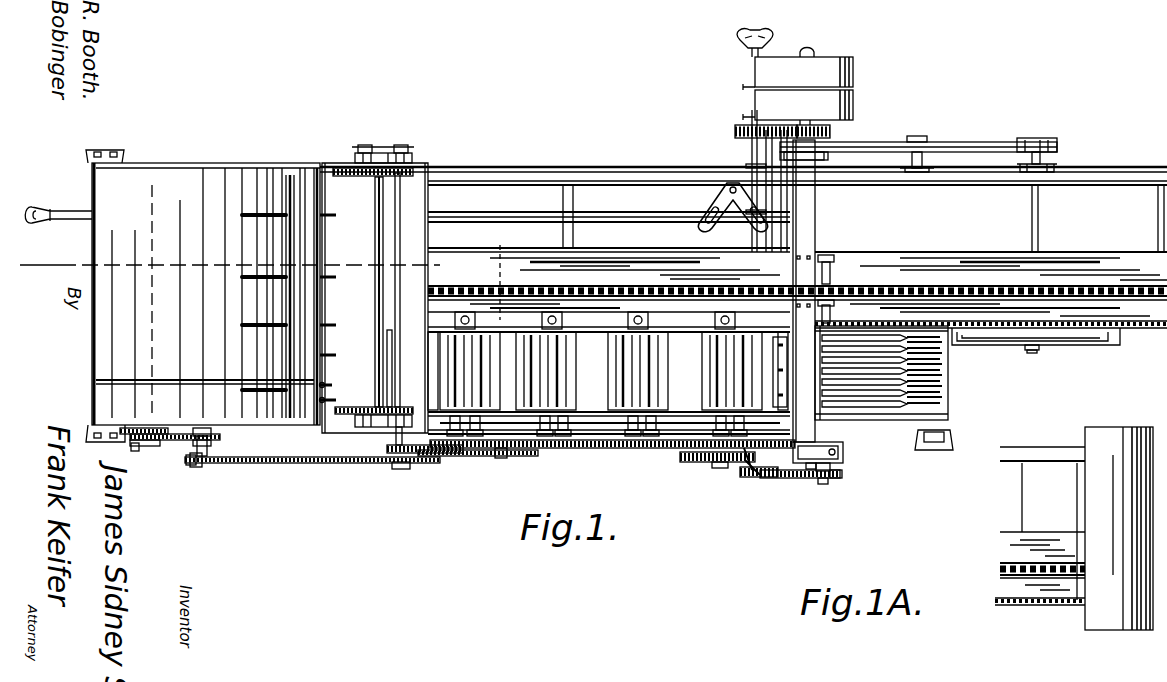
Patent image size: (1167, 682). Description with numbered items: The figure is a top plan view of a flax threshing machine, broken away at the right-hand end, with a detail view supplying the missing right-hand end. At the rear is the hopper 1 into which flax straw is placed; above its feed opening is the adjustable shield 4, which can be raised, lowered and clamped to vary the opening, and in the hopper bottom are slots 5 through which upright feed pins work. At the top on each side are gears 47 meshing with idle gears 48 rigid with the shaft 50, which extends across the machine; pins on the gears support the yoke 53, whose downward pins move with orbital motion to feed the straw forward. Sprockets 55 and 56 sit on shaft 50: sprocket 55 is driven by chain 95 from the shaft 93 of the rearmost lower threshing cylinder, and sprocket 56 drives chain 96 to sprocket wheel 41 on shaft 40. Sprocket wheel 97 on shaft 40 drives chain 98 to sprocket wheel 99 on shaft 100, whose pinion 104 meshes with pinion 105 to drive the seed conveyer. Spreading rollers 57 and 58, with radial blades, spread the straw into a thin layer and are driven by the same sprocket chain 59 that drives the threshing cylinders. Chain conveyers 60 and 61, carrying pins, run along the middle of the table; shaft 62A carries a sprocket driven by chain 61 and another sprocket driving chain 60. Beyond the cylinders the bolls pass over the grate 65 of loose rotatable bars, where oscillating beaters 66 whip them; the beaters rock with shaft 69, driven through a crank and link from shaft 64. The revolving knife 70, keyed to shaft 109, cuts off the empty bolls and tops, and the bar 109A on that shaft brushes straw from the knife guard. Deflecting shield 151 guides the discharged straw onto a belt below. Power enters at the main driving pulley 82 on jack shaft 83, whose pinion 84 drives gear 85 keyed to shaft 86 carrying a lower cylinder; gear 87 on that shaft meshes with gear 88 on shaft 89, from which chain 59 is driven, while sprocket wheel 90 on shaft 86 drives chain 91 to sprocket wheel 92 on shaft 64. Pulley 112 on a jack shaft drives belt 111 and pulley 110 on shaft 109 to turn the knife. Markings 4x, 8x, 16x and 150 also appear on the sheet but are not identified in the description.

In FIG. 1, the hopper 1 is at (170, 185).
In FIG. 1, the adjustable shield 4 is at (292, 185).
In FIG. 1, the center line 4x is at (75, 265).
In FIG. 1, the slots 5 is at (247, 325).
In FIG. 1, the center line 8x is at (609, 278).
In FIG. 1, the gears 47 is at (342, 177).
In FIG. 1, the idle gears 48 is at (408, 176).
In FIG. 1, the shaft 50 is at (400, 262).
In FIG. 1, the yoke 53 is at (376, 246).
In FIG. 1, the spreading roller 57 is at (390, 352).
In FIG. 1, the sprocket 55 is at (396, 447).
In FIG. 1, the sprocket 56 is at (400, 464).
In FIG. 1, the spreading roller 58 is at (480, 350).
In FIG. 1, the sprocket chain 59 is at (570, 450).
In FIG. 1, the shaft 40 is at (212, 446).
In FIG. 1, the sprocket wheel 41 is at (190, 462).
In FIG. 1, the shaft 93 is at (505, 457).
In FIG. 1, the sprocket chain 95 is at (455, 456).
In FIG. 1, the sprocket chain 96 is at (335, 463).
In FIG. 1, the sprocket wheel 97 is at (210, 430).
In FIG. 1, the sprocket chain 98 is at (178, 442).
In FIG. 1, the sprocket wheel 99 is at (112, 442).
In FIG. 1, the shaft 100 is at (135, 450).
In FIG. 1, the pinion 104 is at (142, 428).
In FIG. 1, the pinion 105 is at (168, 430).
In FIG. 1, the roller shaft 150 is at (609, 424).
In FIG. 1, the magazine 16x is at (822, 394).
In FIG. 1, the grate 65 is at (920, 376).
In FIG. 1, the beaters 66 is at (878, 400).
In FIG. 1, the shaft 64 is at (842, 465).
In FIG. 1, the shaft 69 is at (822, 482).
In FIG. 1, the gear 88 is at (698, 462).
In FIG. 1, the shaft 89 is at (718, 466).
In FIG. 1, the gear 87 is at (740, 468).
In FIG. 1, the sprocket wheel 90 is at (755, 478).
In FIG. 1, the sprocket chain 91 is at (790, 480).
In FIG. 1, the sprocket wheel 92 is at (835, 478).
In FIG. 1, the main driving pulley 82 is at (766, 102).
In FIG. 1, the jack shaft 83 is at (808, 52).
In FIG. 1, the pinion 84 is at (832, 133).
In FIG. 1, the gear 85 is at (735, 131).
In FIG. 1, the shaft 86 is at (752, 152).
In FIG. 1, the belt 111 is at (948, 142).
In FIG. 1, the pulley 110 is at (1040, 142).
In FIG. 1, the pulley 112 is at (830, 156).
In FIG. 1, the shaft 109 is at (1032, 211).
In FIG. 1, the bar 109A is at (1038, 353).
In FIG. 1, the chain conveyer 61 is at (1075, 290).
In FIG. 1A, the chain conveyer 61 is at (1005, 568).
In FIG. 1, the shaft 62A is at (830, 268).
In FIG. 1, the chain conveyer 60 is at (1152, 326).
In FIG. 1A, the chain conveyer 60 is at (1032, 604).
In FIG. 1, the revolving knife 70 is at (1100, 338).
In FIG. 1A, the deflecting shield 151 is at (1108, 427).